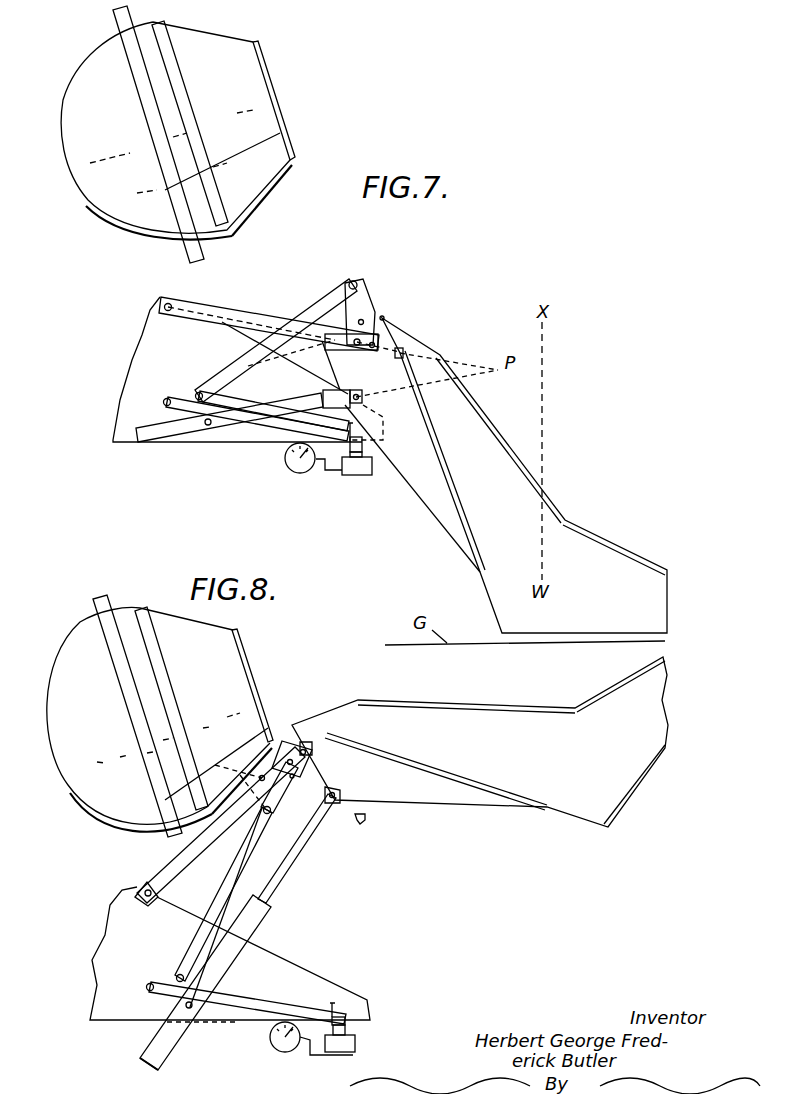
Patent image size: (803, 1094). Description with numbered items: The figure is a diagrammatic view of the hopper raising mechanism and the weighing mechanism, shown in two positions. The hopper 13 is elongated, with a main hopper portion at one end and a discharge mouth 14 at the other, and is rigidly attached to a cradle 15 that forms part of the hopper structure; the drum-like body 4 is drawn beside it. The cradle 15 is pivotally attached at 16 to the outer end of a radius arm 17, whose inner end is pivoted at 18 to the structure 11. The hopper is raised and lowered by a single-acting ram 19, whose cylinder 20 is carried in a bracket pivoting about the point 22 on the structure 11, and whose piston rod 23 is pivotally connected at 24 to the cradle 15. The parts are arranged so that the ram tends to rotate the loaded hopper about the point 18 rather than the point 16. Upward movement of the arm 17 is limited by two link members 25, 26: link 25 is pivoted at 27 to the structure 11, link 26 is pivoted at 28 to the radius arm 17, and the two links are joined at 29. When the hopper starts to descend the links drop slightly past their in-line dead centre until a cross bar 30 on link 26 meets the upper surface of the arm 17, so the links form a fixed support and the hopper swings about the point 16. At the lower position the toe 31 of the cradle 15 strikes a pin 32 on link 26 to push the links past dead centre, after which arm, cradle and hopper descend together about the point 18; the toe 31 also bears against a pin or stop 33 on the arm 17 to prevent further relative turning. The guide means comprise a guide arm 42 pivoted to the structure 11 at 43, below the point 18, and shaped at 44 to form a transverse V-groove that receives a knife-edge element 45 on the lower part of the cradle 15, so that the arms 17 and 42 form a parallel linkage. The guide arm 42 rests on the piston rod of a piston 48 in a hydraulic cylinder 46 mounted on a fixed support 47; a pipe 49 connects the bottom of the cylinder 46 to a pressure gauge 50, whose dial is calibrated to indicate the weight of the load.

In FIG. 7, the drum / bucket 4 is at (257, 185).
In FIG. 8, the drum / bucket 4 is at (227, 650).
In FIG. 7, the structure 11 is at (147, 363).
In FIG. 8, the structure 11 is at (230, 1013).
In FIG. 7, the hopper 13 is at (603, 553).
In FIG. 8, the hopper 13 is at (608, 810).
In FIG. 7, the discharge mouth 14 is at (418, 347).
In FIG. 8, the discharge mouth 14 is at (352, 717).
In FIG. 7, the cradle 15 is at (440, 493).
In FIG. 8, the cradle 15 is at (400, 800).
In FIG. 7, the pivot point 16 is at (402, 355).
In FIG. 8, the pivot point 16 is at (314, 752).
In FIG. 7, the radius arm 17 is at (227, 315).
In FIG. 8, the radius arm 17 is at (175, 865).
In FIG. 7, the pivot point 18 is at (180, 303).
In FIG. 8, the pivot point 18 is at (151, 897).
In FIG. 7, the ram 19 is at (152, 432).
In FIG. 8, the ram 19 is at (158, 1055).
In FIG. 7, the cylinder 20 is at (280, 412).
In FIG. 8, the cylinder 20 is at (220, 965).
In FIG. 7, the pivot point 22 is at (207, 425).
In FIG. 8, the pivot point 22 is at (192, 1010).
In FIG. 7, the piston rod 23 is at (360, 404).
In FIG. 8, the piston rod 23 is at (290, 857).
In FIG. 7, the pivot point 24 is at (362, 396).
In FIG. 8, the pivot point 24 is at (340, 794).
In FIG. 7, the link member 25 is at (328, 303).
In FIG. 8, the link member 25 is at (243, 853).
In FIG. 7, the link member 26 is at (362, 295).
In FIG. 8, the link member 26 is at (275, 805).
In FIG. 7, the pivot point 27 is at (197, 393).
In FIG. 8, the pivot point 27 is at (177, 975).
In FIG. 7, the pivot point 28 is at (363, 349).
In FIG. 8, the pivot point 28 is at (305, 762).
In FIG. 7, the pivot point 29 is at (360, 285).
In FIG. 8, the pivot point 29 is at (268, 816).
In FIG. 7, the cross bar 30 is at (365, 320).
In FIG. 8, the cross bar 30 is at (263, 775).
In FIG. 7, the toe 31 is at (308, 372).
In FIG. 8, the toe 31 is at (226, 907).
In FIG. 7, the pin 32 is at (385, 320).
In FIG. 8, the pin 32 is at (294, 777).
In FIG. 7, the pin or stop 33 is at (293, 360).
In FIG. 8, the pin or stop 33 is at (247, 773).
In FIG. 7, the guide arm 42 is at (268, 420).
In FIG. 8, the guide arm 42 is at (257, 1003).
In FIG. 7, the pivot point 43 is at (166, 403).
In FIG. 8, the pivot point 43 is at (148, 990).
In FIG. 7, the V-groove 44 is at (355, 453).
In FIG. 8, the V-groove 44 is at (334, 1010).
In FIG. 7, the knife-edge element 45 is at (356, 432).
In FIG. 8, the knife-edge element 45 is at (361, 822).
In FIG. 7, the hydraulic cylinder 46 is at (372, 477).
In FIG. 8, the hydraulic cylinder 46 is at (346, 1030).
In FIG. 7, the fixed support 47 is at (356, 476).
In FIG. 8, the fixed support 47 is at (352, 1042).
In FIG. 7, the piston 48 is at (362, 443).
In FIG. 8, the piston 48 is at (346, 1020).
In FIG. 7, the pipe 49 is at (323, 465).
In FIG. 8, the pipe 49 is at (355, 1055).
In FIG. 7, the pressure gauge 50 is at (297, 477).
In FIG. 8, the pressure gauge 50 is at (272, 1045).